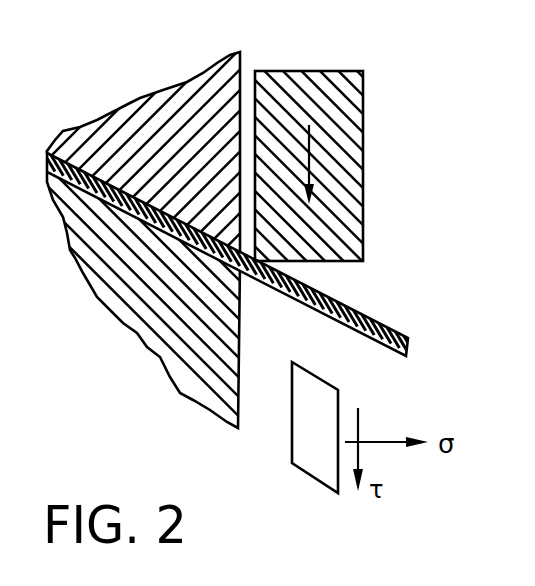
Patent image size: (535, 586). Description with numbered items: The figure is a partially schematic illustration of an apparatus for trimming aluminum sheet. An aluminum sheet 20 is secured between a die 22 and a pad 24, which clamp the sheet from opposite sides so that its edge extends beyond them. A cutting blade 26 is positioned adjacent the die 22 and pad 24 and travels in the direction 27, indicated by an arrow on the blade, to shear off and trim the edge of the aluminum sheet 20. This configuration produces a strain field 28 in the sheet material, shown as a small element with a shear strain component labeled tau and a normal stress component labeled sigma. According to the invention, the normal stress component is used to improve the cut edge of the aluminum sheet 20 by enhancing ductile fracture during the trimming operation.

The aluminum sheet 20 is at (363, 313).
The die 22 is at (133, 333).
The pad 24 is at (130, 103).
The cutting blade 26 is at (363, 112).
The direction 27 is at (310, 166).
The strain field 28 is at (327, 383).